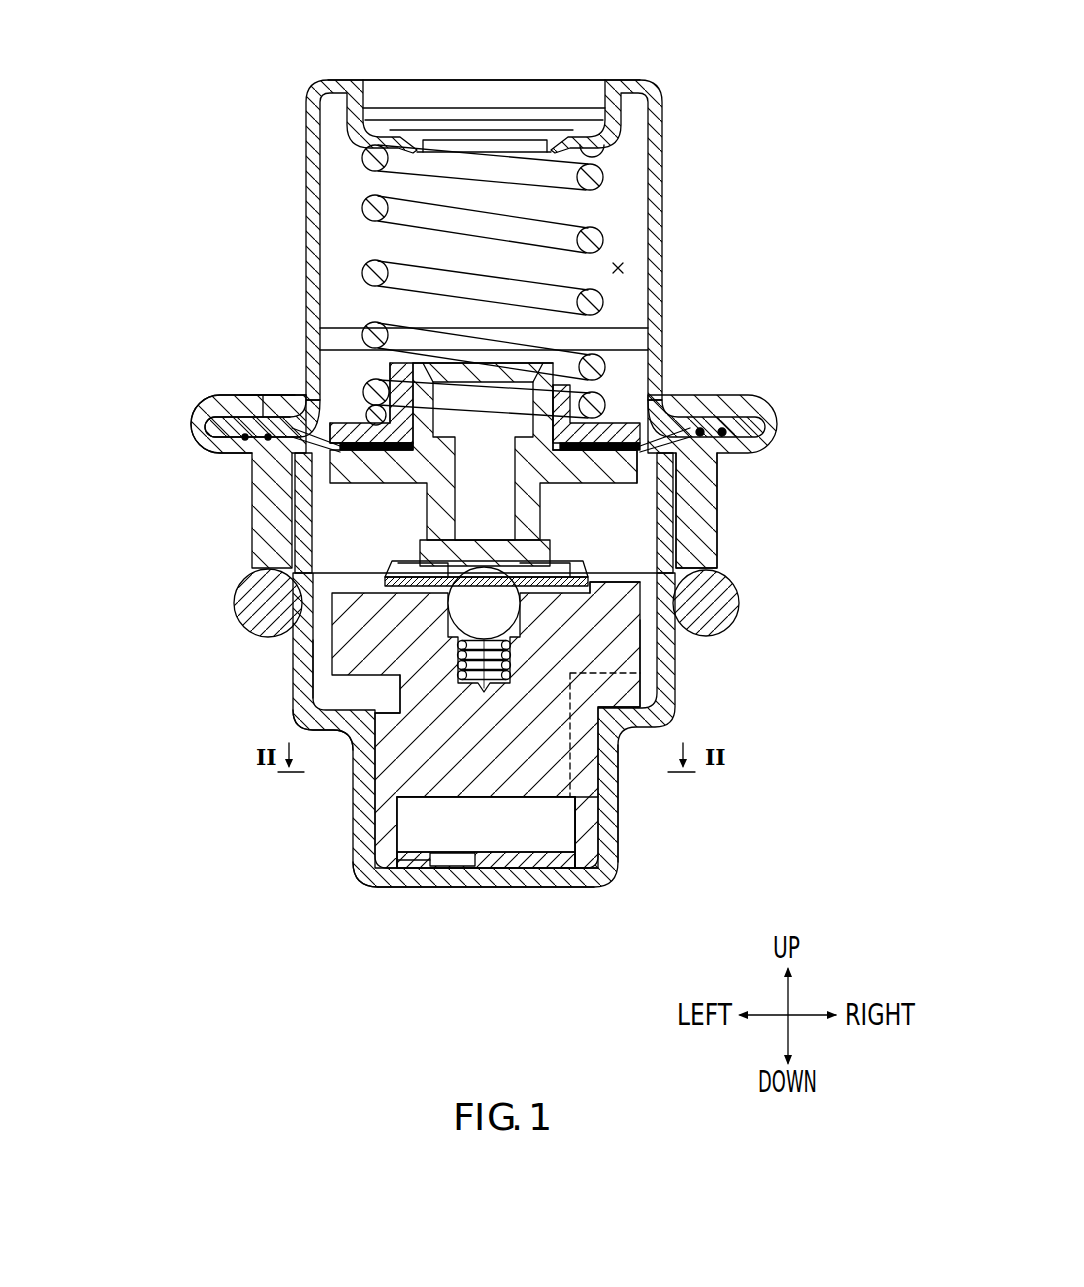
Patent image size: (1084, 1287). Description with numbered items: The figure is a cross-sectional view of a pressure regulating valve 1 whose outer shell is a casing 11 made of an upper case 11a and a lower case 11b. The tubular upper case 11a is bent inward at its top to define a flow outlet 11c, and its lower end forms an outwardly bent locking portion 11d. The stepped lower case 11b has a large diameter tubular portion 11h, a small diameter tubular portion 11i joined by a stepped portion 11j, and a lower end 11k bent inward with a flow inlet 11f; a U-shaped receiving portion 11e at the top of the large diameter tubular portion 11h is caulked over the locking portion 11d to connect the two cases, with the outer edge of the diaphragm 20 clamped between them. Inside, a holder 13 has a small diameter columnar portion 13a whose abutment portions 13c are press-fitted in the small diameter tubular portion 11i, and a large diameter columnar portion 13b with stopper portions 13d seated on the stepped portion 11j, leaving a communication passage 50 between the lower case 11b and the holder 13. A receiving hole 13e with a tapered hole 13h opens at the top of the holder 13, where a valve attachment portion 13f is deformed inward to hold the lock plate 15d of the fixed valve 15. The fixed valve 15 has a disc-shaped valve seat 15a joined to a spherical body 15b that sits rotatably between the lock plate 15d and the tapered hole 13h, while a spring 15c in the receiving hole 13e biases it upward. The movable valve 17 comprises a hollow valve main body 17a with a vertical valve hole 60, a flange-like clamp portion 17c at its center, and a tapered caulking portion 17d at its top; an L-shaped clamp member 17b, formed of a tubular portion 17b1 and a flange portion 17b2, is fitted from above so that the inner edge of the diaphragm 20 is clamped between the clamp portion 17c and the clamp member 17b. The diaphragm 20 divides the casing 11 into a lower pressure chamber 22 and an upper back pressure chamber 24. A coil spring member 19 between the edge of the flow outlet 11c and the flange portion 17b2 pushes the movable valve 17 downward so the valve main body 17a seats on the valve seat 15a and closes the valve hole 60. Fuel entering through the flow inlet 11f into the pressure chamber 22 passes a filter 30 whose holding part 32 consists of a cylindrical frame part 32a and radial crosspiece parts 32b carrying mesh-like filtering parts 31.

The pressure regulating valve 1 is at (660, 76).
The casing 11 is at (776, 402).
The upper case 11a is at (653, 203).
The lower case 11b is at (670, 540).
The flow outlet 11c is at (500, 150).
The locking portion 11d is at (218, 422).
The receiving portion 11e is at (255, 403).
The flow inlet 11f is at (507, 878).
The large diameter tubular portion 11h is at (590, 582).
The small diameter tubular portion 11i is at (386, 839).
The stepped portion 11j is at (341, 718).
The lower end 11k is at (587, 870).
The holder 13 is at (450, 612).
The small diameter columnar portion 13a is at (590, 824).
The large diameter columnar portion 13b is at (628, 692).
The abutment portions 13c is at (547, 778).
The stopper portions 13d is at (648, 697).
The receiving hole 13e is at (613, 658).
The valve attachment portion 13f is at (663, 607).
The tapered hole 13h is at (427, 625).
The fixed valve 15 is at (558, 546).
The valve seat 15a is at (437, 553).
The spherical body 15b is at (470, 598).
The spring 15c is at (460, 655).
The lock plate 15d is at (390, 575).
The movable valve 17 is at (422, 512).
The valve main body 17a is at (545, 413).
The clamp member 17b is at (618, 428).
The tubular portion 17b1 is at (350, 430).
The flange portion 17b2 is at (400, 397).
The clamp portion 17c is at (627, 468).
The caulking portion 17d is at (553, 360).
The spring member 19 is at (363, 212).
The diaphragm 20 is at (235, 432).
The pressure chamber 22 is at (338, 577).
The back pressure chamber 24 is at (624, 268).
The filter 30 is at (597, 867).
The filtering parts 31 is at (412, 862).
The holding part 32 is at (344, 870).
The frame part 32a is at (587, 828).
The crosspiece parts 32b is at (556, 862).
The communication passage 50 is at (330, 661).
The valve hole 60 is at (708, 436).